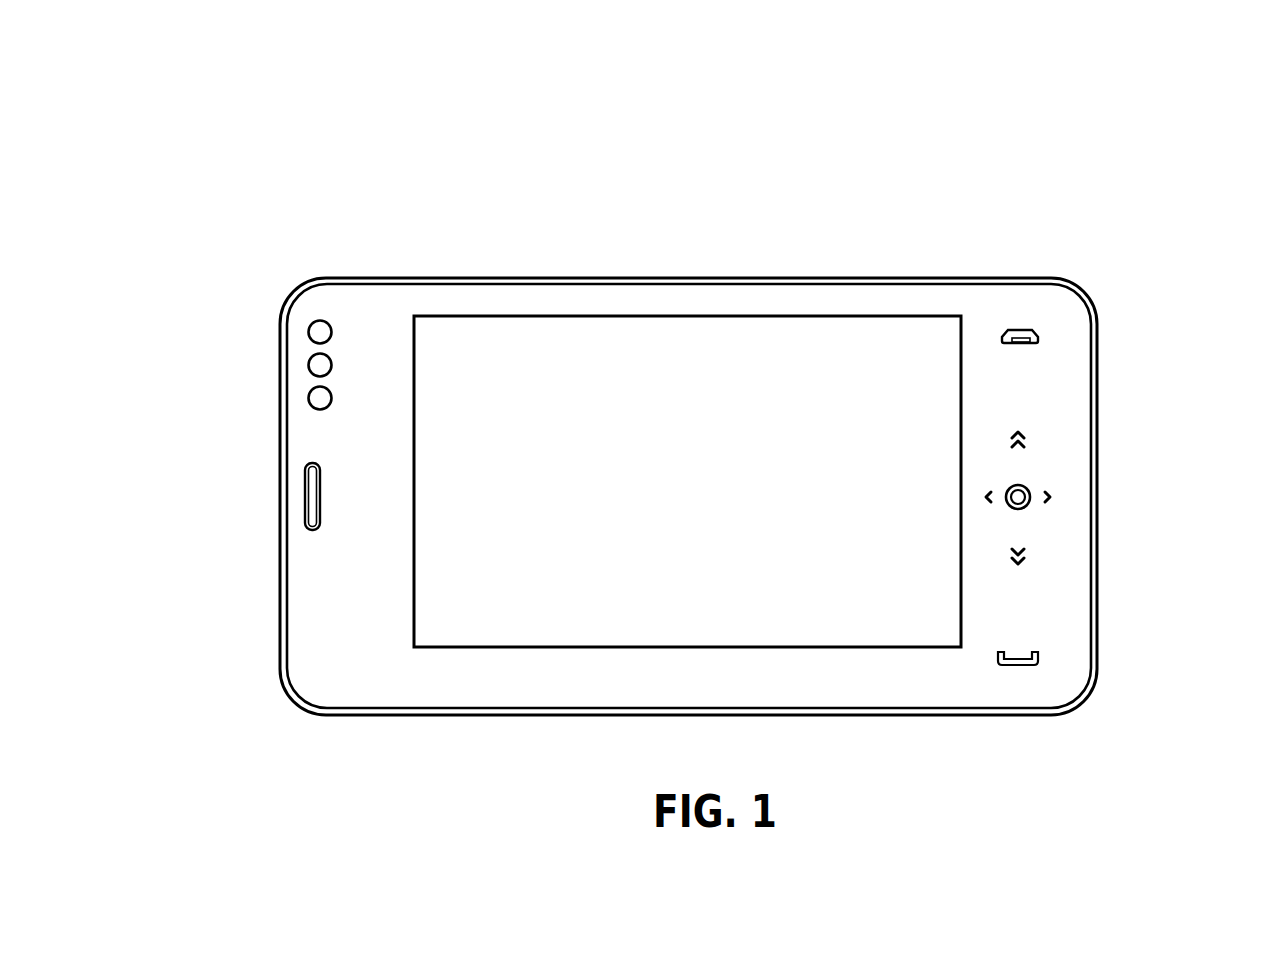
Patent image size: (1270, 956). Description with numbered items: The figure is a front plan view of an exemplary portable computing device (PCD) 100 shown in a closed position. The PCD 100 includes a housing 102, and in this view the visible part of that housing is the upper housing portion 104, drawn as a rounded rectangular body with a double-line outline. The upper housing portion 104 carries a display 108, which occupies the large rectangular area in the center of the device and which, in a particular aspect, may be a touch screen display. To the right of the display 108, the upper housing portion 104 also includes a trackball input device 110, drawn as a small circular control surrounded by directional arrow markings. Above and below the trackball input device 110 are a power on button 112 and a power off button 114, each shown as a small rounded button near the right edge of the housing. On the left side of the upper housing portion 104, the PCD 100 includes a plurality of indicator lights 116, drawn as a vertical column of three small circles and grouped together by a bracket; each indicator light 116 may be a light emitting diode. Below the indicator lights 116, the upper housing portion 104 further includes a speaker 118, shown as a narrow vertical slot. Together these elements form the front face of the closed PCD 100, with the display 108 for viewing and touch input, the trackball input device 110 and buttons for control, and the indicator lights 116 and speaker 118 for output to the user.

The portable computing device 100 is at (1150, 212).
The housing 102 is at (318, 278).
The upper housing portion 104 is at (677, 293).
The display 108 is at (690, 624).
The trackball input device 110 is at (1028, 505).
The power on button 112 is at (1040, 662).
The power off button 114 is at (1037, 332).
The indicator lights 116 is at (310, 312).
The speaker 118 is at (311, 498).